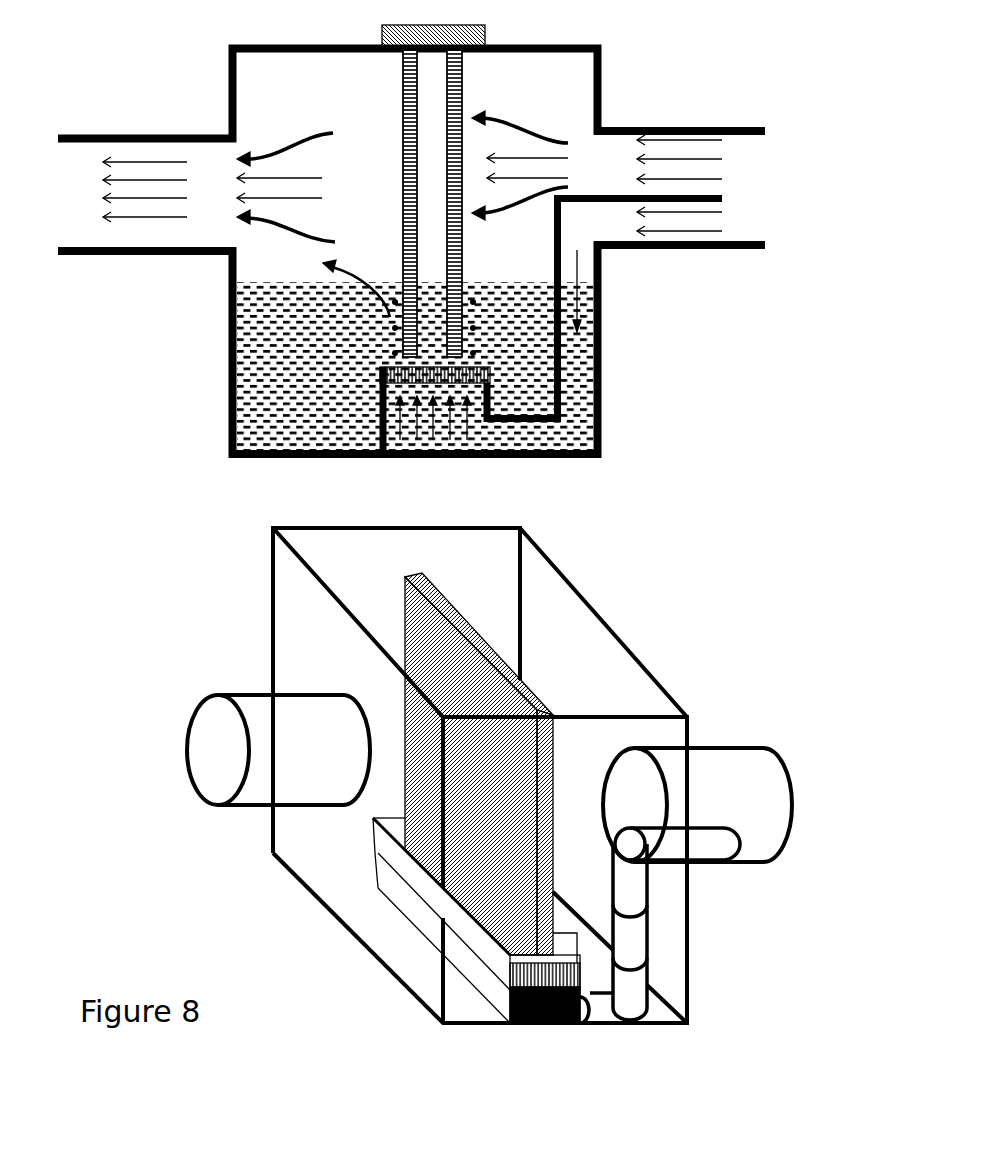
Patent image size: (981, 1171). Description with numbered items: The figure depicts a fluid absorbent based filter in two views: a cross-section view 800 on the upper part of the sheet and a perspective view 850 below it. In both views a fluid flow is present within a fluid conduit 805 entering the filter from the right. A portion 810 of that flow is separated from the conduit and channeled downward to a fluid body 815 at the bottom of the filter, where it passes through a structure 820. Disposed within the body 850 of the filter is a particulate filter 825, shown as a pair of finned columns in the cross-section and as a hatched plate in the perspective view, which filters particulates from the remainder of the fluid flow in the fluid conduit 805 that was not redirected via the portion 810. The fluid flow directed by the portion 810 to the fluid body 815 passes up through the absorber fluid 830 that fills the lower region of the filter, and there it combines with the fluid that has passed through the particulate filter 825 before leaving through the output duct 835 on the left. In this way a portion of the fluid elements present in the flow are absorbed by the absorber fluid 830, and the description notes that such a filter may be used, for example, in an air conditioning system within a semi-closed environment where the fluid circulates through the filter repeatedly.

The cross-section view 800 is at (715, 464).
The fluid conduit 805 is at (758, 183).
The portion 810 is at (615, 225).
The fluid body 815 is at (425, 423).
The structure 820 is at (460, 377).
The particulate filter 825 is at (467, 88).
The absorber fluid 830 is at (283, 380).
The output duct 835 is at (147, 263).
The perspective view 850 is at (228, 72).